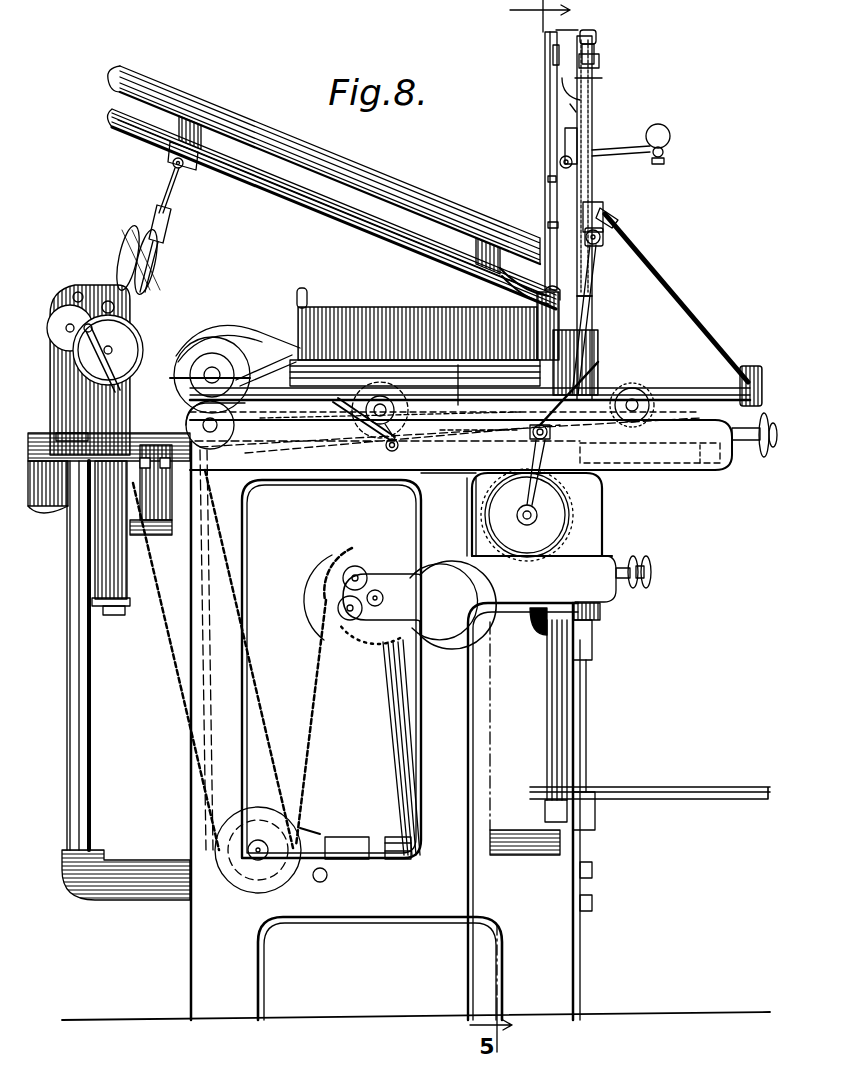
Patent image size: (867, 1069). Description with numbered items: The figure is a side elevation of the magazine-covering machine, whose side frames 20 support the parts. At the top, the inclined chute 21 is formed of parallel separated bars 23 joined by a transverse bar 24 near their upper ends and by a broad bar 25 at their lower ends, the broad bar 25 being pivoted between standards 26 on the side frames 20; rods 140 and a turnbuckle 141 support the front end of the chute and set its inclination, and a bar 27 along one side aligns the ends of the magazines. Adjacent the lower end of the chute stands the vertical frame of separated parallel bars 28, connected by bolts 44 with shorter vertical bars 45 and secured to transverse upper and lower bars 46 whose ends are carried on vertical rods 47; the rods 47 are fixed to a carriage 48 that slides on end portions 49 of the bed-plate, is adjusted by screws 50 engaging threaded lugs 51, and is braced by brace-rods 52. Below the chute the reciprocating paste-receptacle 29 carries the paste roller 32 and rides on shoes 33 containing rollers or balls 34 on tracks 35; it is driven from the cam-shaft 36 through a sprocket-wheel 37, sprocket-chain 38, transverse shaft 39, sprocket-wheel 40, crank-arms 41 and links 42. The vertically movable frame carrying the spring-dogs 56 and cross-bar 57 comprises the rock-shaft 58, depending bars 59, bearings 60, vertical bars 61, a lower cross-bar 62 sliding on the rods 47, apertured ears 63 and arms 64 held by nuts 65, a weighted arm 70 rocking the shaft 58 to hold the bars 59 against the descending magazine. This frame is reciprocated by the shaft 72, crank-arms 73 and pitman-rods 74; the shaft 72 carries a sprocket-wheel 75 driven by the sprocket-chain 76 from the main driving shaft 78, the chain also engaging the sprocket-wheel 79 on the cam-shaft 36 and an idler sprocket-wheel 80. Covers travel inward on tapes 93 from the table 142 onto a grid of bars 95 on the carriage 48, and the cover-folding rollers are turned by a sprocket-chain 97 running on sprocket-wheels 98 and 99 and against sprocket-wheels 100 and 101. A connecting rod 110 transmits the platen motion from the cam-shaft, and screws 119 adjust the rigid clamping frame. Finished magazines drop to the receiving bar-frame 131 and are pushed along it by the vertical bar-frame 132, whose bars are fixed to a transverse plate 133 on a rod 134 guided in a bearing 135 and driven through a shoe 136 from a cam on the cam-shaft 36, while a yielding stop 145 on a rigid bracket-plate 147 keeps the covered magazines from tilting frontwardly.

The side frames 20 is at (403, 731).
The inclined chute 21 is at (258, 186).
The bars 23 is at (324, 208).
The transverse bar 24 is at (170, 152).
The broad bar 25 is at (472, 280).
The standards 26 is at (577, 362).
The bar 27 is at (385, 195).
The vertical bars 28 is at (547, 135).
The paste-receptacle 29 is at (372, 308).
The roller 32 is at (520, 300).
The shoes 33 is at (575, 338).
The rollers or balls 34 is at (440, 362).
The tracks 35 is at (280, 385).
The cam-shaft 36 is at (256, 852).
The sprocket-wheel 37 is at (320, 880).
The sprocket-chain 38 is at (298, 606).
The transverse shaft 39 is at (396, 412).
The sprocket-wheel 40 is at (430, 438).
The crank-arms 41 is at (386, 438).
The links 42 is at (332, 412).
The bolts 44 is at (569, 30).
The vertical bars 45 is at (598, 38).
The transverse upper and lower bars 46 is at (597, 42).
The vertical rods 47 is at (592, 112).
The carriage 48 is at (582, 398).
The end portions of bed-plate 49 is at (668, 472).
The adjusting screws 50 is at (764, 440).
The internally threaded lugs 51 is at (700, 470).
The brace-rods 52 is at (695, 326).
The spring-dogs 56 is at (548, 178).
The cross-bar 57 is at (548, 57).
The transverse rod 58 is at (560, 160).
The depending bars 59 is at (548, 224).
The bearings 60 is at (598, 140).
The vertical bars 61 is at (594, 76).
The lower cross-bar 62 is at (598, 244).
The apertured ears 63 is at (602, 60).
The arms 64 is at (560, 92).
The nuts 65 is at (575, 108).
The weighted arm 70 is at (657, 160).
The shaft 72 is at (540, 515).
The crank-arms 73 is at (560, 492).
The pitman-rods 74 is at (592, 308).
The sprocket-wheel 75 is at (539, 515).
The sprocket-chain 76 is at (206, 480).
The main driving shaft 78 is at (216, 428).
The sprocket-wheel 79 is at (318, 830).
The idler sprocket-wheel 80 is at (381, 646).
The tapes or belts 93 is at (290, 372).
The grid of bars 95 is at (684, 395).
The sprocket-chain 97 is at (640, 378).
The sprocket-wheel 98 is at (268, 365).
The sprocket-wheel 99 is at (652, 405).
The sprocket-wheel 100 is at (536, 430).
The sprocket-wheel 101 is at (590, 432).
The connecting rod 110 is at (402, 734).
The screws 119 is at (638, 582).
The receiving bar-frame 131 is at (726, 787).
The vertical bar-frame 132 is at (546, 718).
The transverse plate 133 is at (545, 812).
The rod 134 is at (528, 850).
The bearing 135 is at (394, 836).
The shoe 136 is at (347, 847).
The rods 140 is at (174, 181).
The turnbuckle 141 is at (168, 226).
The table 142 is at (48, 432).
The vertical plate or stop 145 is at (582, 704).
The rigid bracket-plate 147 is at (590, 650).